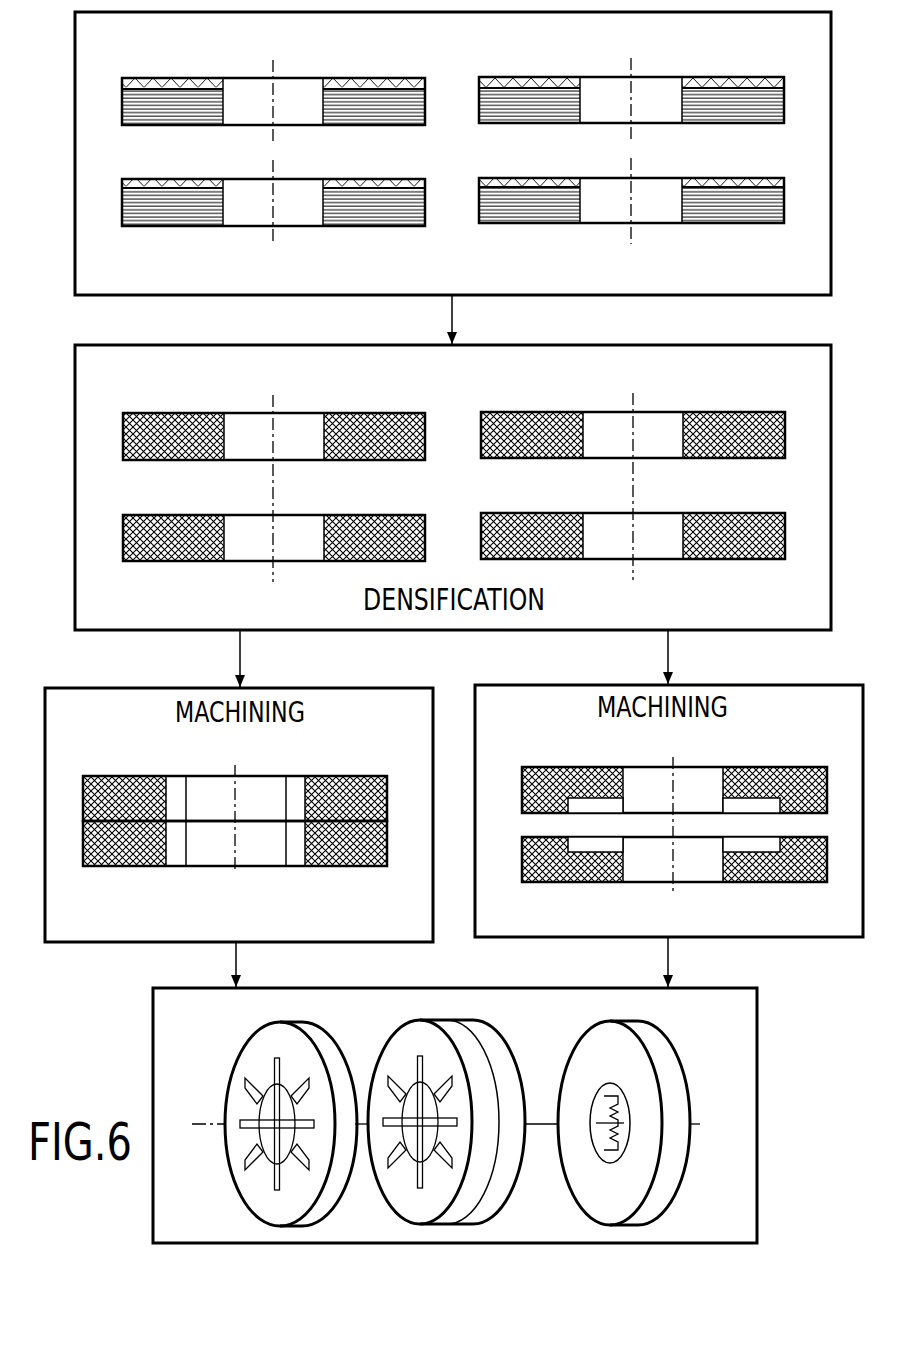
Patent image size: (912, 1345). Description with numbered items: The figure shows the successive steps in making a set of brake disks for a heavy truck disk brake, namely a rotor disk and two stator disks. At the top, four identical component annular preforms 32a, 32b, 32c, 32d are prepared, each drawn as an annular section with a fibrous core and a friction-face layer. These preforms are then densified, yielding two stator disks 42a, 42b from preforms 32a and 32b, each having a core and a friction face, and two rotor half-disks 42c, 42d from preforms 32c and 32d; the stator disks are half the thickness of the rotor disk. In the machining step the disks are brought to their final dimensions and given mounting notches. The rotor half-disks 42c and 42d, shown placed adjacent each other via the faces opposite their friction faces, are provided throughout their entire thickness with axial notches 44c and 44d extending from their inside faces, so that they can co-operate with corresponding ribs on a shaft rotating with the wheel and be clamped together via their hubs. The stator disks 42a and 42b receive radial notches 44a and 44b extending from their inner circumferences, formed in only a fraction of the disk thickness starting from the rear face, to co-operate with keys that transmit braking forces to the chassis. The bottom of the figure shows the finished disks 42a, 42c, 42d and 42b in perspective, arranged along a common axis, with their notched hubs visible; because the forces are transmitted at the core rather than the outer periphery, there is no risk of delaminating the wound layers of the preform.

The component annular preform 32a is at (526, 76).
The component annular preform 32b is at (528, 177).
The component annular preform 32c is at (175, 77).
The component annular preform 32d is at (172, 178).
The stator disk 42a is at (526, 411).
The stator disk 42b is at (528, 512).
The rotor half-disk 42c is at (174, 412).
The rotor half-disk 42d is at (173, 514).
The radial notch 44a is at (622, 806).
The radial notch 44b is at (622, 844).
The axial notch 44c is at (176, 784).
The axial notch 44d is at (174, 860).